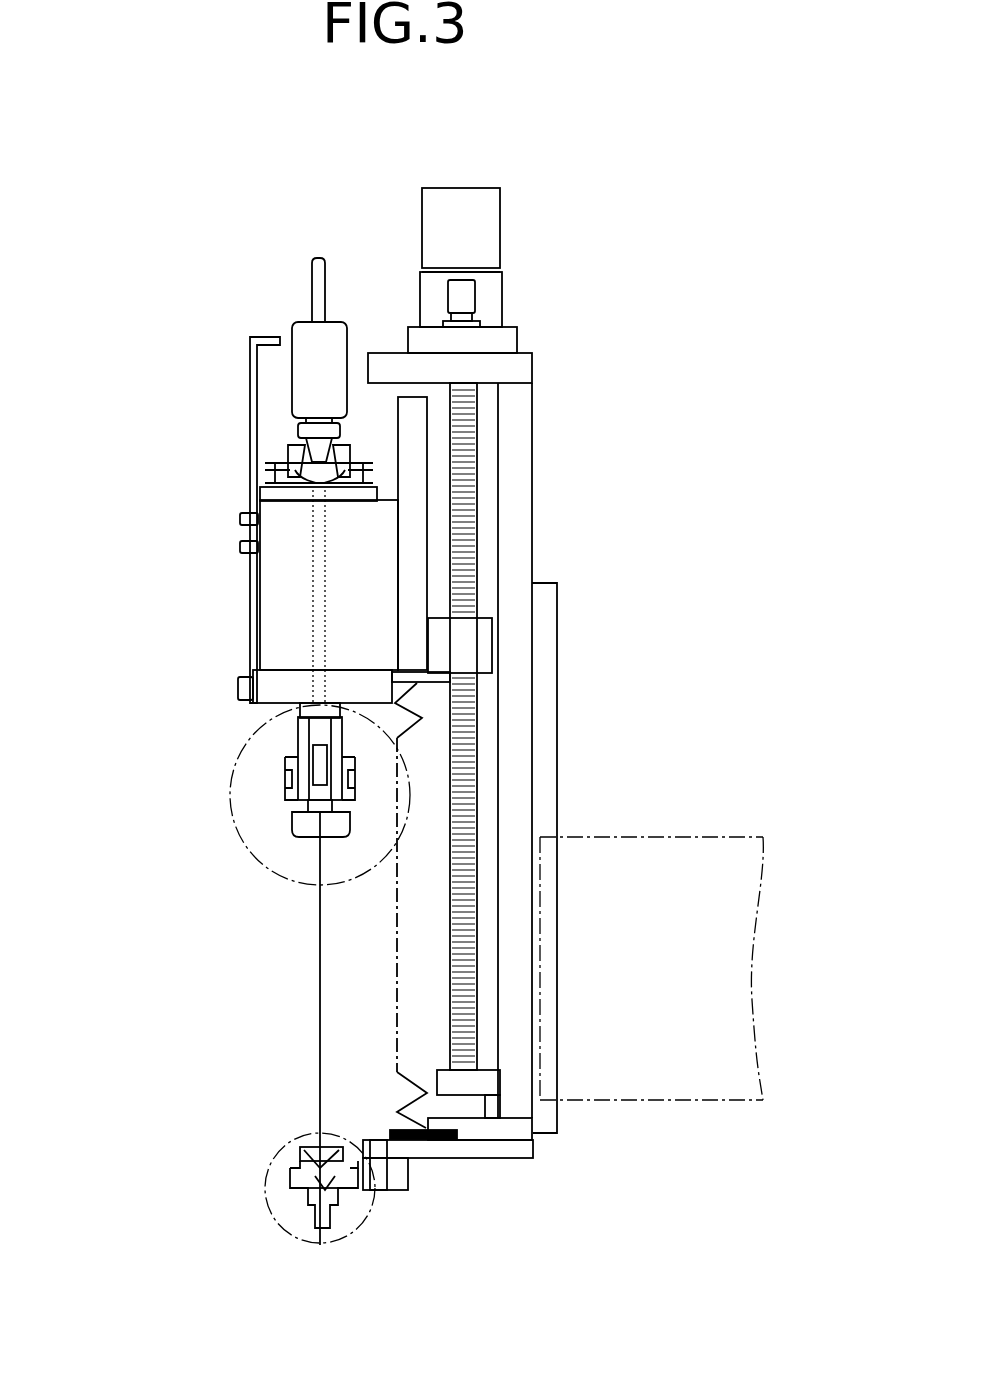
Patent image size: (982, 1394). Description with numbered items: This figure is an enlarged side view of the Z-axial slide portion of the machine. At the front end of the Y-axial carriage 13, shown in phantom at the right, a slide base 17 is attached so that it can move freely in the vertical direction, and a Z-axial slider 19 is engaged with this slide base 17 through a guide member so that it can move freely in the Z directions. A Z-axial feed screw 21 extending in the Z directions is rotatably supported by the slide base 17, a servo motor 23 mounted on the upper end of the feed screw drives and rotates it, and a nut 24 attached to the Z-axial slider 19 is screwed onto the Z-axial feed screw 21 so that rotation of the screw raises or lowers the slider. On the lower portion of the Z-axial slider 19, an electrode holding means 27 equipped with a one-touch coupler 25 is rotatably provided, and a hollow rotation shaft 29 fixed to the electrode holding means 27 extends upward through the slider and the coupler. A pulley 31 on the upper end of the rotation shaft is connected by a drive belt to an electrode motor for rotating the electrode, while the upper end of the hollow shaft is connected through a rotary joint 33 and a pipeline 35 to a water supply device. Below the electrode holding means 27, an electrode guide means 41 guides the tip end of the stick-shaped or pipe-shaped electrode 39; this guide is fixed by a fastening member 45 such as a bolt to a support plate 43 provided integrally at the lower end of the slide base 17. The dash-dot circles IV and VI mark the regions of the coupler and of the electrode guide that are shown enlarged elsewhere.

The Y-axial carriage 13 is at (590, 1092).
The slide base 17 is at (527, 973).
The Z-axial slider 19 is at (275, 602).
The Z-axial feed screw 21 is at (475, 487).
The servo motor 23 is at (500, 228).
The nut 24 is at (473, 650).
The one-touch coupler 25 is at (283, 742).
The electrode holding means 27 is at (286, 837).
The hollow rotation shaft 29 is at (300, 636).
The pulley 31 is at (258, 470).
The rotary joint 33 is at (305, 335).
The pipeline 35 is at (308, 285).
The electrode 39 is at (316, 974).
The electrode guide means 41 is at (302, 1214).
The support plate 43 is at (397, 1168).
The fastening member 45 is at (300, 1167).
The detail IV circle IV is at (229, 818).
The detail VI circle VI is at (262, 1212).